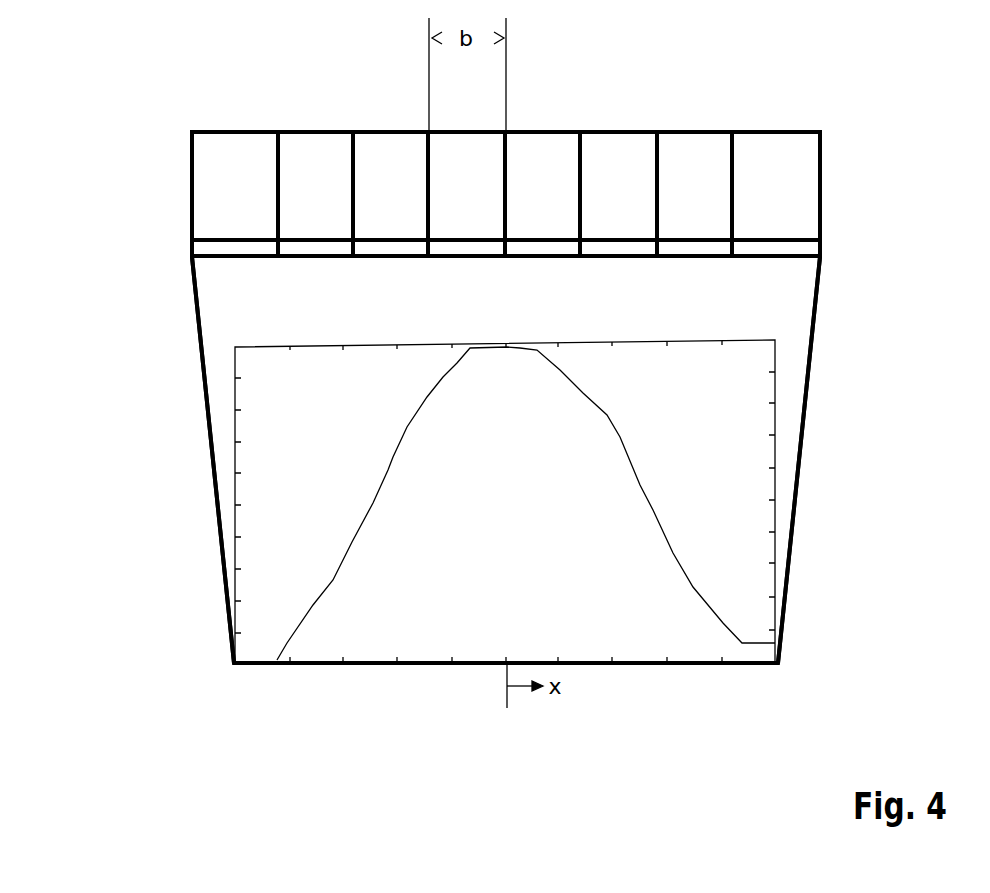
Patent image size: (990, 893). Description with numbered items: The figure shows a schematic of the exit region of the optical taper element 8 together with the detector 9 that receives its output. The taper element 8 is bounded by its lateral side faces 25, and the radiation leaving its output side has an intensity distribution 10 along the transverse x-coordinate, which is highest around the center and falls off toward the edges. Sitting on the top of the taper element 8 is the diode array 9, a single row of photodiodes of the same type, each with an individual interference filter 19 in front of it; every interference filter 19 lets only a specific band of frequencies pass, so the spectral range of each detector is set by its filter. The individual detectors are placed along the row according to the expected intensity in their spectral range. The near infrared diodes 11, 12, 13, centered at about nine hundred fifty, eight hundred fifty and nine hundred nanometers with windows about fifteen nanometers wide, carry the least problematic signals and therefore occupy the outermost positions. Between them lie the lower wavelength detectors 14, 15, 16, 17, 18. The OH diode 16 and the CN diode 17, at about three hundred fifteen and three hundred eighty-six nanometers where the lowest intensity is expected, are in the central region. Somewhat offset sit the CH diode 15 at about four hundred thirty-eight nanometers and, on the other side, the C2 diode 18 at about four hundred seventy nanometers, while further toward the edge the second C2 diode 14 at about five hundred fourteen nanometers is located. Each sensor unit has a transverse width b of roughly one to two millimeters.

The diode array 9 is at (822, 130).
The IR diode 11 is at (215, 150).
The C2 (Δv=0) diode 14 is at (318, 149).
The CH diode 15 is at (392, 150).
The OH diode 16 is at (465, 150).
The CN diode 17 is at (549, 150).
The C2 (Δv=-1) diode 18 is at (608, 150).
The IR diode 12 is at (690, 150).
The IR diode 13 is at (777, 150).
The interference filter elements 19 is at (797, 248).
The taper element 8 is at (792, 320).
The side faces 25 is at (212, 440).
The intensity distribution 10 is at (637, 470).